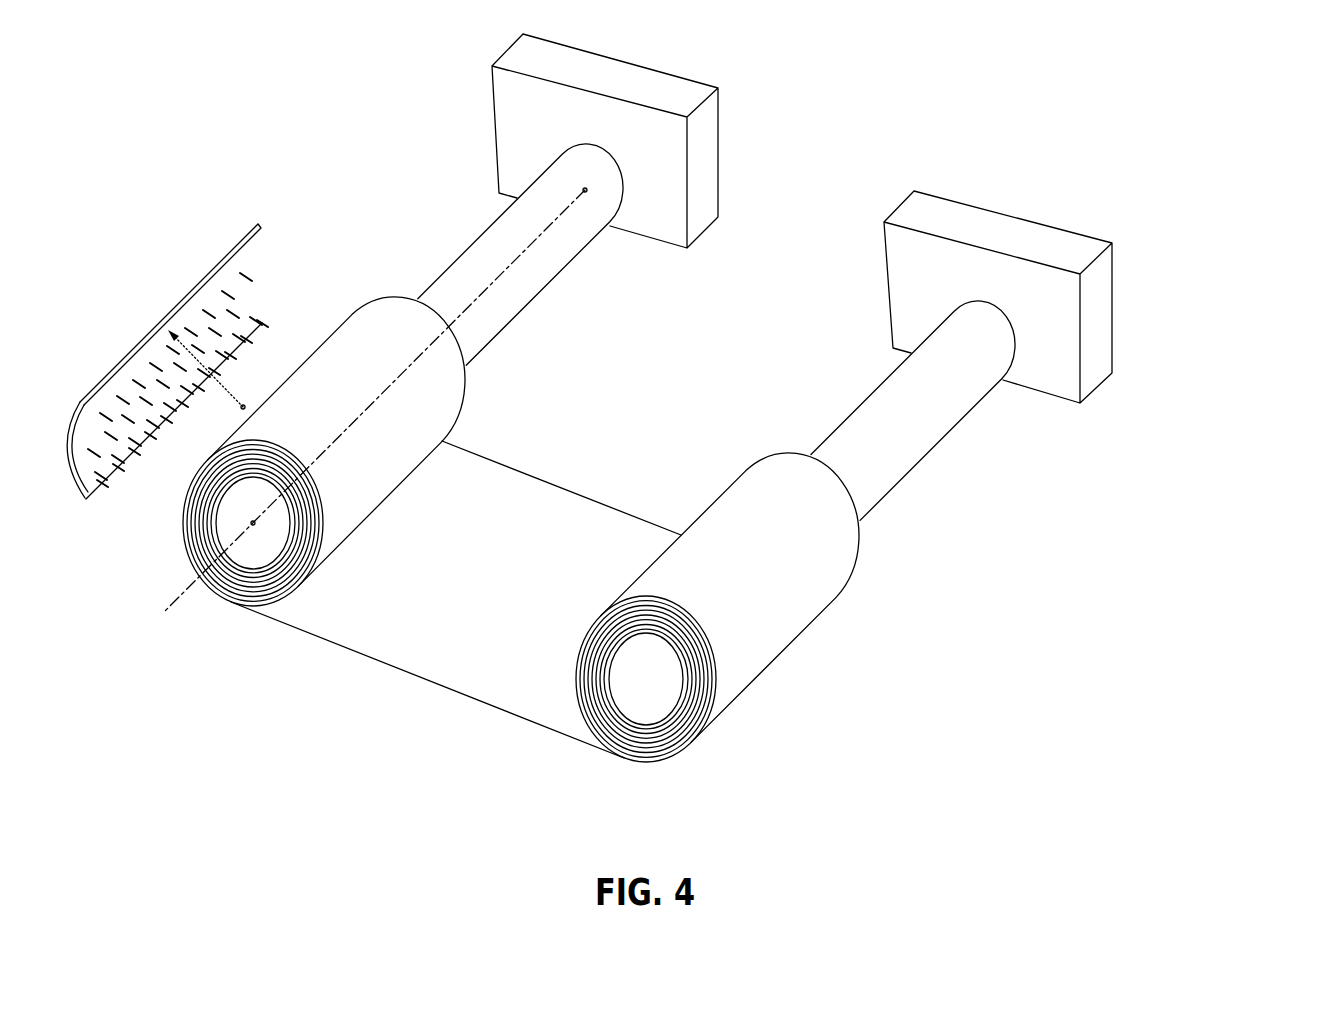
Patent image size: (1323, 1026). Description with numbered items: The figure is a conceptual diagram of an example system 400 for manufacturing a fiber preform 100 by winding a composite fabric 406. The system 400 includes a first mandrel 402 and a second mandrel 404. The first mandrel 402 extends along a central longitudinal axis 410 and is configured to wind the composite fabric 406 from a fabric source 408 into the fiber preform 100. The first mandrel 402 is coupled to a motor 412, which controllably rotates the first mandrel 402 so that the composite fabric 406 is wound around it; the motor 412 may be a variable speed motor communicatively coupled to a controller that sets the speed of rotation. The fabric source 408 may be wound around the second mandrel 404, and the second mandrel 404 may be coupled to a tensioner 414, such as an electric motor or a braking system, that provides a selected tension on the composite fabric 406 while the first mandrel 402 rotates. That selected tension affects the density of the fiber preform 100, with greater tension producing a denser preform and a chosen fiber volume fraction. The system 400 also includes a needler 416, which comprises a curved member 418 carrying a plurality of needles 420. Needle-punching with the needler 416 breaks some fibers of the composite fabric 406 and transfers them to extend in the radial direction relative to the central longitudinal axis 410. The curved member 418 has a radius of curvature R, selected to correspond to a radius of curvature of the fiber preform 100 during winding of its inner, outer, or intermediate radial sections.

The fiber preform 100 is at (190, 543).
The system 400 is at (1222, 72).
The first mandrel 402 is at (492, 238).
The second mandrel 404 is at (878, 402).
The composite fabric 406 is at (540, 490).
The fabric source 408 is at (688, 735).
The central longitudinal axis 410 is at (172, 598).
The motor 412 is at (502, 103).
The tensioner 414 is at (892, 252).
The needler 416 is at (126, 293).
The curved member 418 is at (254, 300).
The needles 420 is at (257, 315).